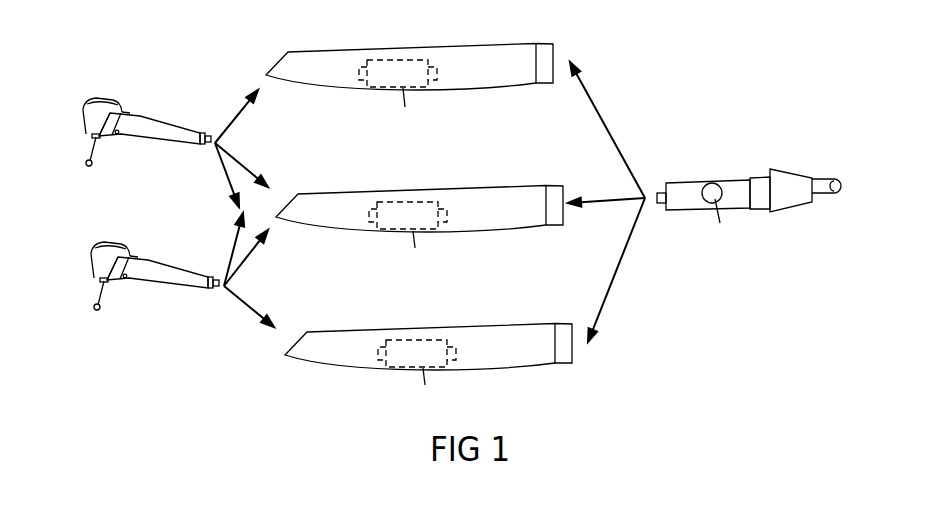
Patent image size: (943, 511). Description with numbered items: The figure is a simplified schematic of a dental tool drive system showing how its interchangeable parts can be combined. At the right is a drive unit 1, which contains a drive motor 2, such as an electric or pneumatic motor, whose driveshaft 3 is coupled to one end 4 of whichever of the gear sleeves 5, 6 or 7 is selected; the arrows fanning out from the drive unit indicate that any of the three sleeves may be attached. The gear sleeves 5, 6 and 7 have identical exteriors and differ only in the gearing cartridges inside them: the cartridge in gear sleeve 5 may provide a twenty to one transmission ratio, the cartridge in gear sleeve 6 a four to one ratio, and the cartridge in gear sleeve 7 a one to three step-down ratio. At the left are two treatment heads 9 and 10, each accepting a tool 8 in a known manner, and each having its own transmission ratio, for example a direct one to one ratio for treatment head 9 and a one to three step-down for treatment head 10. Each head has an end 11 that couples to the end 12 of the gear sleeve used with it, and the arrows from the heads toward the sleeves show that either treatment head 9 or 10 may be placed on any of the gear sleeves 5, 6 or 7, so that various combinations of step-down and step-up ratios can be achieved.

The drive unit 1 is at (700, 212).
The drive motor 2 is at (712, 183).
The driveshaft 3 is at (659, 189).
The end of gear sleeve 4 is at (408, 60).
The gear sleeve 5 is at (511, 63).
The gear sleeve 6 is at (517, 202).
The gear sleeve 7 is at (528, 336).
The tool 8 is at (98, 147).
The treatment head 9 is at (121, 116).
The treatment head 10 is at (149, 251).
The end of drive head 11 is at (207, 139).
The end of gear sleeve 12 is at (362, 62).